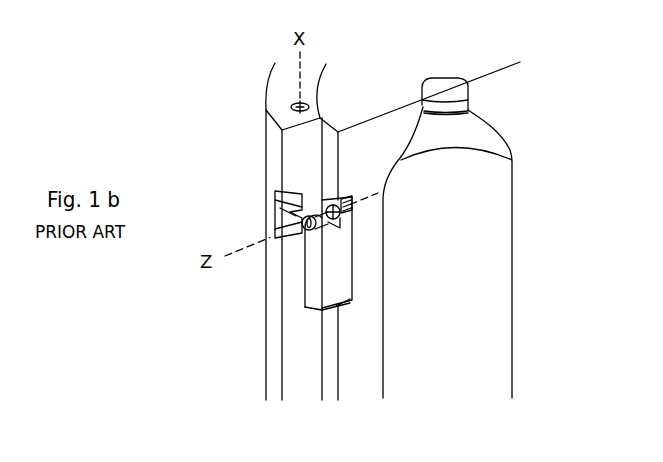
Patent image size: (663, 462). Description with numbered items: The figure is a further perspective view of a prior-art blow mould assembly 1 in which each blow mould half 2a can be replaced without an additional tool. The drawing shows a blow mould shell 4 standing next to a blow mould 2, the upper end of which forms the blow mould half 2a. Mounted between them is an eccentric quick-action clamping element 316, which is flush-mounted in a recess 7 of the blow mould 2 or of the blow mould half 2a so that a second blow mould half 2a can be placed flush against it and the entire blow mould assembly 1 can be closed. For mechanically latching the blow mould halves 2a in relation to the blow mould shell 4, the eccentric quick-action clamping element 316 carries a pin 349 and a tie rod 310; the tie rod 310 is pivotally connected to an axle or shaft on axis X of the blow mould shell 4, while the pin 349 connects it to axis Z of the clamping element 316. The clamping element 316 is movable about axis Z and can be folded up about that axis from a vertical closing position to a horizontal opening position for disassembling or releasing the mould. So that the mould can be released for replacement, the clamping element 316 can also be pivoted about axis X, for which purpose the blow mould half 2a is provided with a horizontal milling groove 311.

The blow mould assembly 1 is at (262, 152).
The blow mould 2 is at (498, 115).
The blow mould half 2a is at (432, 60).
The blow mould shell 4 is at (302, 366).
The recess 7 is at (350, 303).
The tie rod 310 is at (322, 235).
The horizontal milling groove 311 is at (273, 203).
The eccentric quick-action clamping element 316 is at (338, 278).
The pin 349 is at (300, 225).